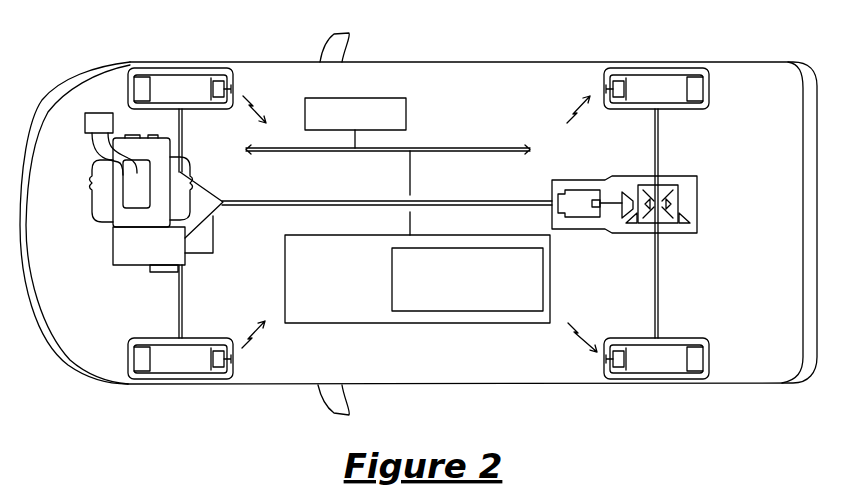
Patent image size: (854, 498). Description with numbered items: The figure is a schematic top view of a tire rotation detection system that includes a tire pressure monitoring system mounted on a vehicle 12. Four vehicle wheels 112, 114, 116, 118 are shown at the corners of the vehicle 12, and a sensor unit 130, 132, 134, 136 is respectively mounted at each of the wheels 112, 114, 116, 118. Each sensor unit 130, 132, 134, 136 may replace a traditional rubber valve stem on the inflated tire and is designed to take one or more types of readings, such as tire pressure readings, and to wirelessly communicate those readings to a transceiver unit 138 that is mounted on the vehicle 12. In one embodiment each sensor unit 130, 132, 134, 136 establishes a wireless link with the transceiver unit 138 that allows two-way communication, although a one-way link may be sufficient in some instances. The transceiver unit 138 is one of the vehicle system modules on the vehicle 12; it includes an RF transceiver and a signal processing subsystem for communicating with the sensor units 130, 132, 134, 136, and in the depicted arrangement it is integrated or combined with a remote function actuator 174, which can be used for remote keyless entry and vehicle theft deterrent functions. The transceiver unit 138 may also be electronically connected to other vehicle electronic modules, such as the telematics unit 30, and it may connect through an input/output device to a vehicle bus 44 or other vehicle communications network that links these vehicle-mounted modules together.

The vehicle 12 is at (84, 338).
The telematics unit 30 is at (355, 114).
The vehicle bus 44 is at (269, 153).
The vehicle wheel 112 is at (181, 367).
The vehicle wheel 114 is at (177, 80).
The vehicle wheel 116 is at (663, 365).
The vehicle wheel 118 is at (652, 88).
The sensor unit 130 is at (229, 363).
The sensor unit 132 is at (231, 86).
The sensor unit 134 is at (611, 362).
The sensor unit 136 is at (614, 72).
The transceiver unit 138 is at (467, 279).
The remote function actuator 174 is at (417, 279).